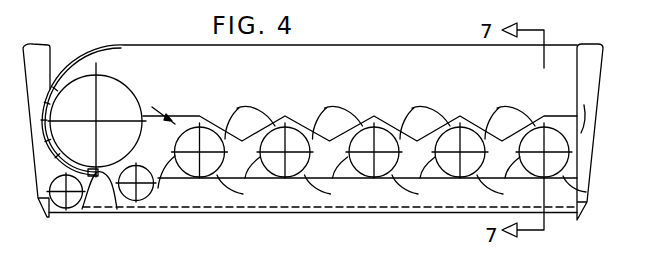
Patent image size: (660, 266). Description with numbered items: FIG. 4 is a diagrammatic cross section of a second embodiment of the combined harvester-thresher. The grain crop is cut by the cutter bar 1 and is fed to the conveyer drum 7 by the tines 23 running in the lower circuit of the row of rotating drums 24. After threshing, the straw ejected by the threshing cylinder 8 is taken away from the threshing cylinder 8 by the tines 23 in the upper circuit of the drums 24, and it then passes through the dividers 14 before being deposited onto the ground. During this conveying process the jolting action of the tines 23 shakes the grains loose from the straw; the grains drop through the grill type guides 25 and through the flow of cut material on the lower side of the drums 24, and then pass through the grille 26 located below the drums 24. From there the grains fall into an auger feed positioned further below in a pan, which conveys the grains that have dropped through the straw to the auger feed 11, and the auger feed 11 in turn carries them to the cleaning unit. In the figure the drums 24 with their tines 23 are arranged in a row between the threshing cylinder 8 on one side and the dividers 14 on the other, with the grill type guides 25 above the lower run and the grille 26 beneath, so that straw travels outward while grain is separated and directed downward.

The cutter bar 1 is at (353, 212).
The conveyer drum 7 is at (141, 197).
The threshing cylinder 8 is at (122, 97).
The auger feed 11 is at (70, 205).
The divider 14 is at (585, 52).
The tine 23 is at (252, 107).
The rotating drum 24 is at (463, 131).
The grill type guide 25 is at (376, 124).
The grille 26 is at (490, 207).